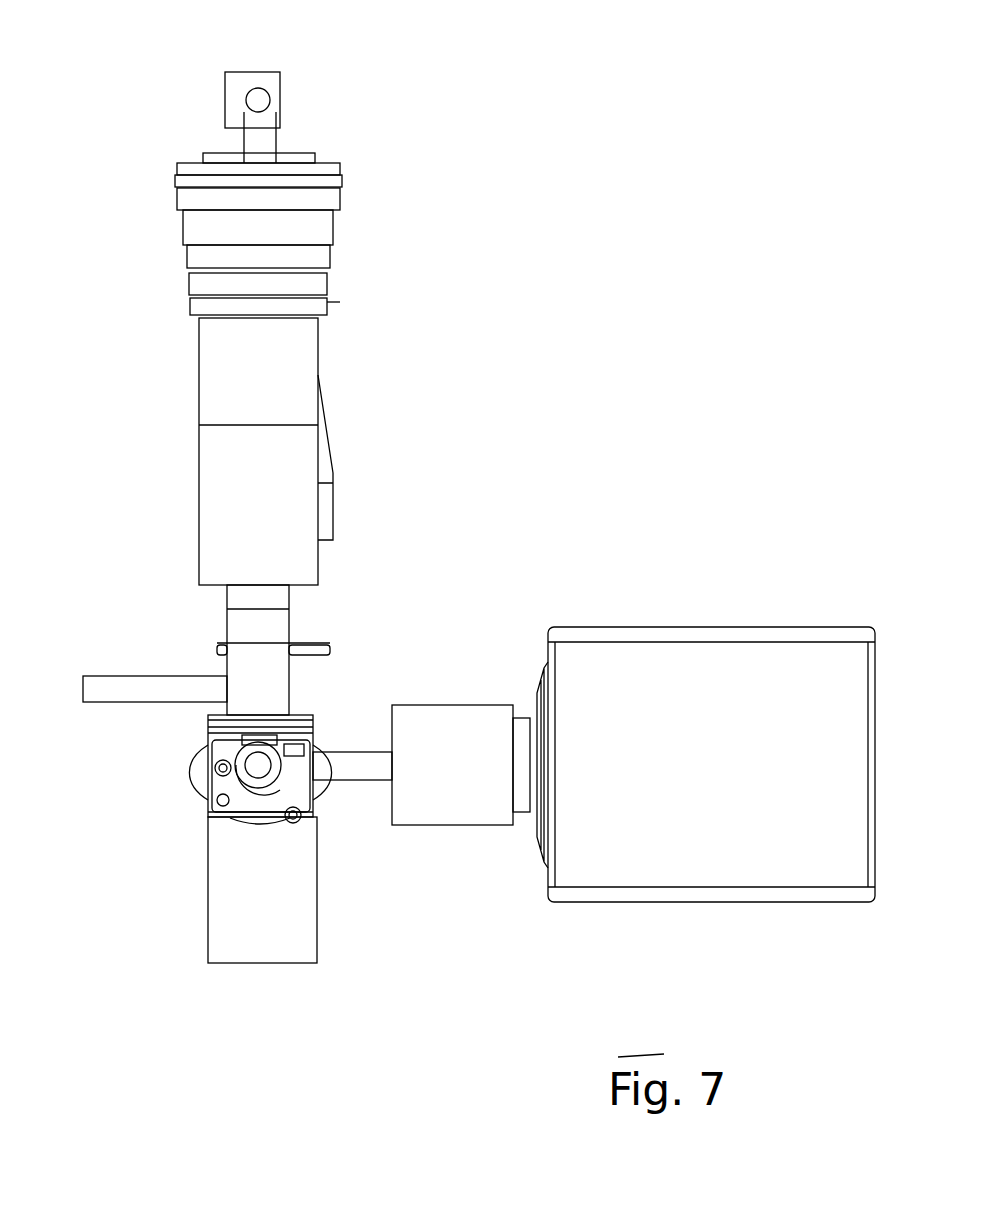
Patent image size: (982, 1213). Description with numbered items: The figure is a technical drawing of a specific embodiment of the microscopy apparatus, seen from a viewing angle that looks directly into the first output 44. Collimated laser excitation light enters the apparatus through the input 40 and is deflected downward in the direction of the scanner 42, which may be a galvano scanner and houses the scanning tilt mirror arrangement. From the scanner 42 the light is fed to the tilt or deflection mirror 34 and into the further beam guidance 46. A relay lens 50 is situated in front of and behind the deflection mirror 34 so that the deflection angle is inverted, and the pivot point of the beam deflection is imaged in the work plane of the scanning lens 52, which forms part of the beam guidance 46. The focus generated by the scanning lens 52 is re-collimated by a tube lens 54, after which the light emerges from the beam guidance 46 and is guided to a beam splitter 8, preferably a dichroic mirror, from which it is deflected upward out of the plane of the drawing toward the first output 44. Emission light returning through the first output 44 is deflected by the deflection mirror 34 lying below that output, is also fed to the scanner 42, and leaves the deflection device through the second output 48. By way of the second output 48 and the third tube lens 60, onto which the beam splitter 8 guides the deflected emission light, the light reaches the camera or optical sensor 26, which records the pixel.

The beam splitter 8 is at (297, 91).
The optical sensor 26 is at (647, 680).
The deflection mirror 34 is at (227, 90).
The input 40 is at (93, 688).
The scanner 42 is at (269, 942).
The first output 44 is at (258, 100).
The beam guidance 46 is at (285, 367).
The second output 48 is at (333, 777).
The relay lens 50 is at (273, 595).
The scanning lens 52 is at (243, 398).
The tube lens 54 is at (303, 235).
The third tube lens 60 is at (422, 735).